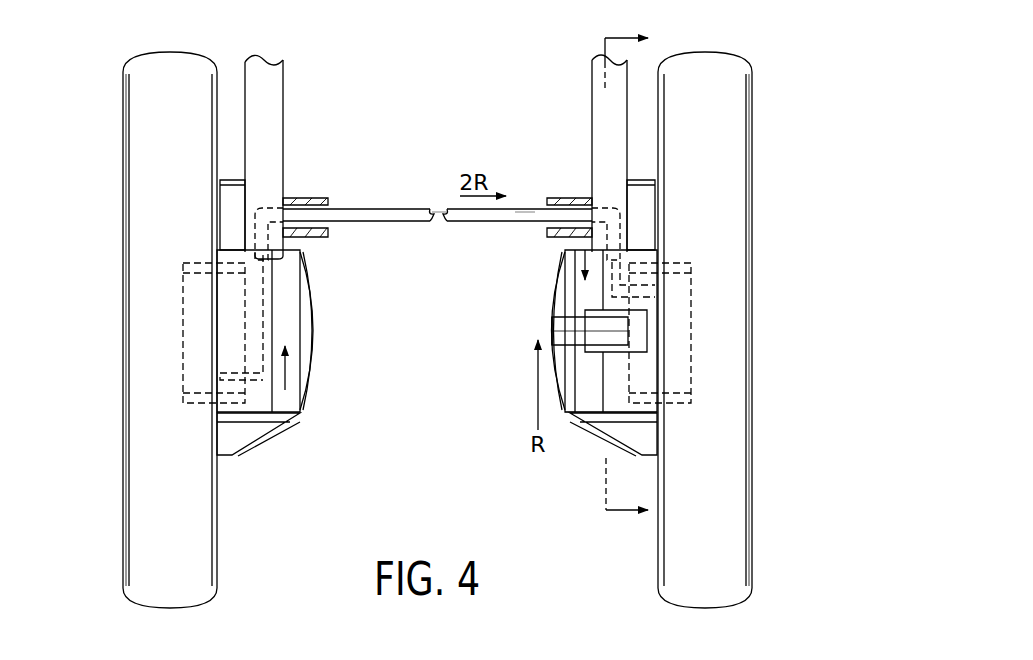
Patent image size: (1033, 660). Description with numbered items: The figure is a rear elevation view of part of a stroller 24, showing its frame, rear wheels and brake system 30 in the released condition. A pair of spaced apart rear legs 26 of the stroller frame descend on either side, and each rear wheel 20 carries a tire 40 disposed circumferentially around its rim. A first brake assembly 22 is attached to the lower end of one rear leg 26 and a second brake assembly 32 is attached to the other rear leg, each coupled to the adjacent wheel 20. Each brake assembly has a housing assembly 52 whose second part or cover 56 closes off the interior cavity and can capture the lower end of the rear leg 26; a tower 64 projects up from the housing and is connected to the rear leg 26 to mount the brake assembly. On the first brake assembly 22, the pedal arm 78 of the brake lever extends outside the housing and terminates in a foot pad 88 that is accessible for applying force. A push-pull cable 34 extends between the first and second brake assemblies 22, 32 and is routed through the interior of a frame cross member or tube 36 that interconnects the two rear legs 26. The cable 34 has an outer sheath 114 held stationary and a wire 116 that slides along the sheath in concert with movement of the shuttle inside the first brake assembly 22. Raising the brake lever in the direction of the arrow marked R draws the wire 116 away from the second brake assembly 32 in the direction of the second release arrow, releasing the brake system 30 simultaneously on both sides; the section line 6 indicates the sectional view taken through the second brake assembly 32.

The section line 6- 6 is at (632, 277).
The stroller wheel 20 is at (767, 108).
The first brake assembly 22 is at (593, 444).
The stroller 24 is at (108, 42).
The rear legs 26 is at (273, 108).
The brake system 30 is at (433, 246).
The second brake assembly 32 is at (276, 446).
The push-pull cable 34 is at (362, 200).
The frame cross member or tube 36 is at (296, 196).
The tire 40 is at (143, 477).
The housing assembly 52 is at (324, 311).
The second part or cover 56 is at (323, 330).
The tower 64 is at (238, 188).
The pedal arm 78 is at (606, 337).
The foot pad 88 is at (557, 337).
The outer sheath 114 is at (525, 208).
The wire 116 is at (438, 208).